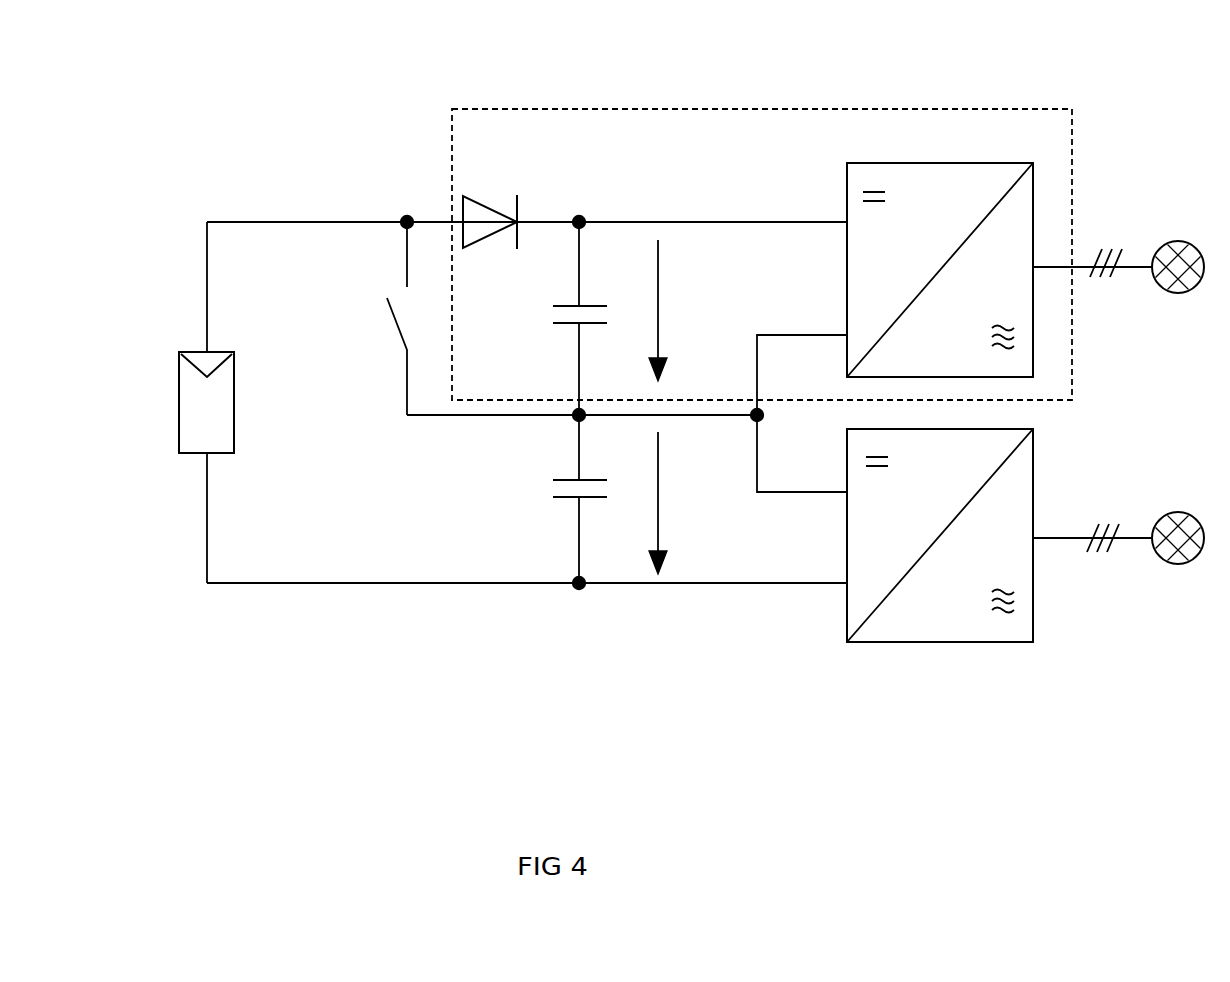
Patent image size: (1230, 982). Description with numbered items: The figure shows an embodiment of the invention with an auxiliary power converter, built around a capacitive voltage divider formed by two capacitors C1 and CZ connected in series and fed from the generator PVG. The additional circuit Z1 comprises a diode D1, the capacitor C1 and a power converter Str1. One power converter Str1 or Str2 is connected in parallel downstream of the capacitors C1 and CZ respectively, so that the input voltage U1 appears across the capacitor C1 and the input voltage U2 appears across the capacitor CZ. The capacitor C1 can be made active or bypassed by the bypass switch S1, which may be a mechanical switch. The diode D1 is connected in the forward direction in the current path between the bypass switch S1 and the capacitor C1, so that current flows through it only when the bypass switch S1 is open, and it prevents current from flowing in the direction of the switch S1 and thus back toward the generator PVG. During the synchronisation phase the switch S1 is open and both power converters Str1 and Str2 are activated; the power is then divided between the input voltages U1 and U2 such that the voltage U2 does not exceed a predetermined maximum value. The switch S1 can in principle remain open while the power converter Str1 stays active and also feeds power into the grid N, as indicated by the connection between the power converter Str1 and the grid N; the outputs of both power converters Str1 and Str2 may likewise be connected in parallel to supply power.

The additional circuit Z1 is at (620, 108).
The generator PVG is at (157, 402).
The bypass switch S1 is at (376, 321).
The diode D1 is at (490, 192).
The capacitor C1 is at (560, 335).
The capacitor CZ is at (560, 509).
The input voltage U1 is at (677, 310).
The input voltage U2 is at (677, 503).
The power converter Str1 is at (940, 249).
The power converter Str2 is at (940, 561).
The grid N is at (1156, 402).